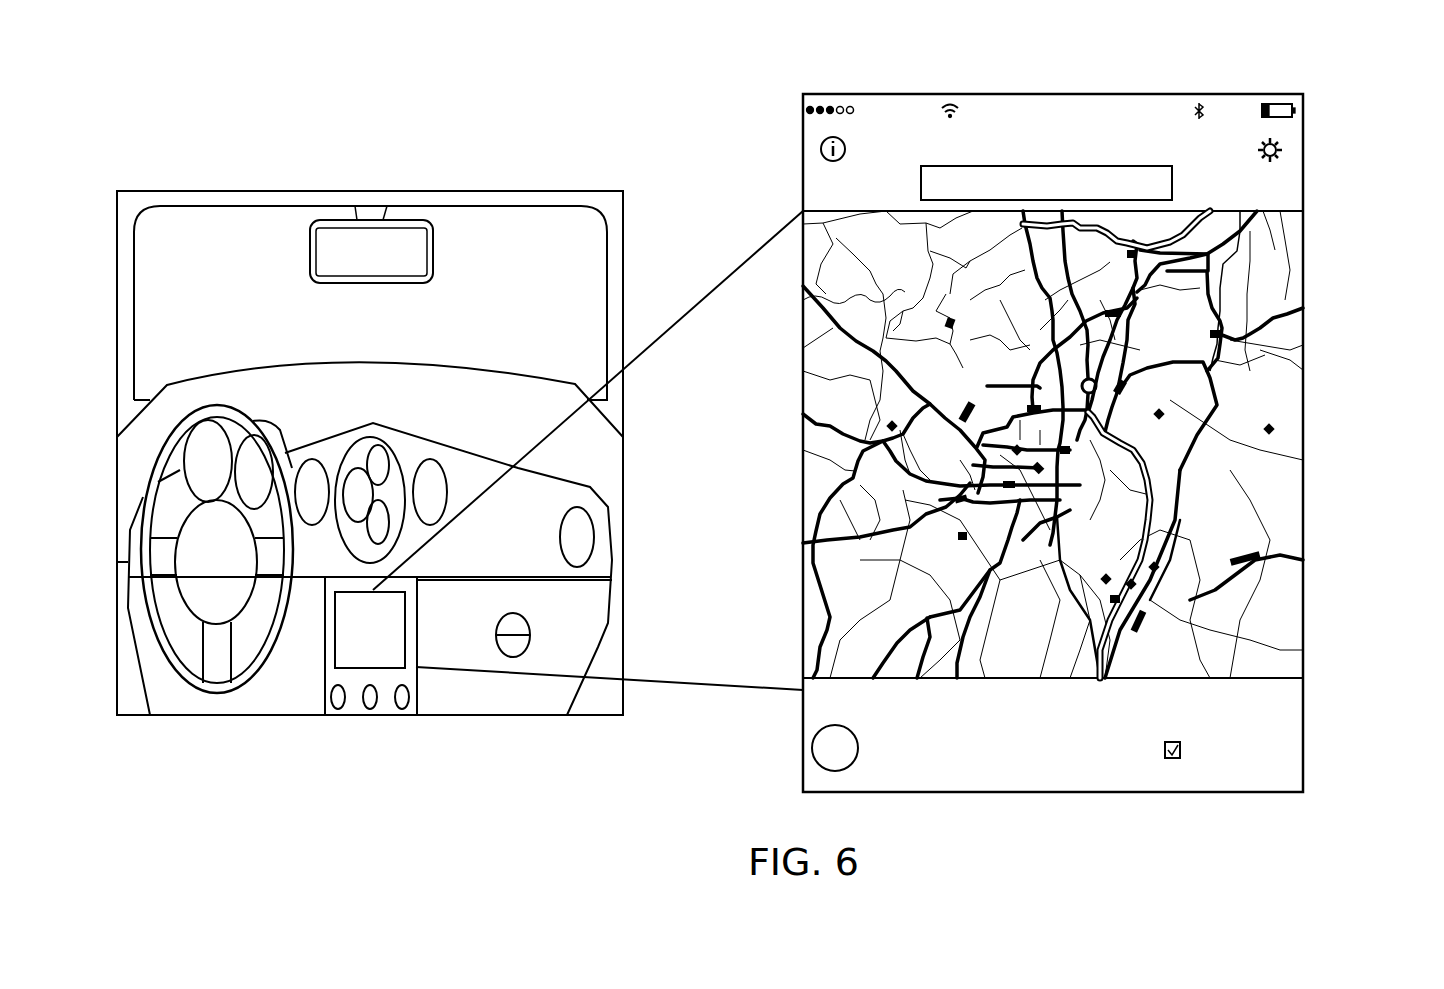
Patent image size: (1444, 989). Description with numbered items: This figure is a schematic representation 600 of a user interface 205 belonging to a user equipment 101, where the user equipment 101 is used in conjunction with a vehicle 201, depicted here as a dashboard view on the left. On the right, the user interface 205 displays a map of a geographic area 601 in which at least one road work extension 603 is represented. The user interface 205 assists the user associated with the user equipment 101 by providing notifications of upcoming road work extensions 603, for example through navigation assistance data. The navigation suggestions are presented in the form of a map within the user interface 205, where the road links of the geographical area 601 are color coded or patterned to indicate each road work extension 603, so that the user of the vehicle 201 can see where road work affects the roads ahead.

The schematic representation 600 is at (622, 125).
The vehicle 201 is at (198, 191).
The user equipment 101 is at (323, 688).
The user interface 205 is at (1125, 120).
The geographic area 601 is at (1188, 210).
The road work extension 603 is at (1127, 440).